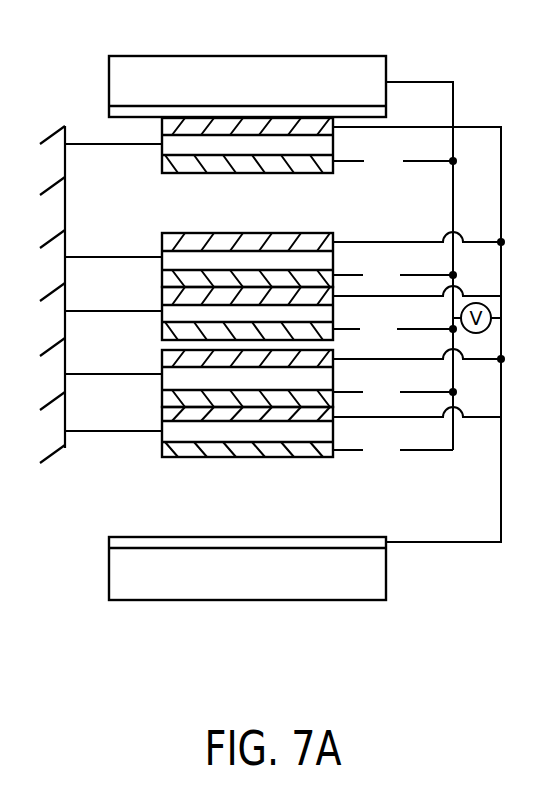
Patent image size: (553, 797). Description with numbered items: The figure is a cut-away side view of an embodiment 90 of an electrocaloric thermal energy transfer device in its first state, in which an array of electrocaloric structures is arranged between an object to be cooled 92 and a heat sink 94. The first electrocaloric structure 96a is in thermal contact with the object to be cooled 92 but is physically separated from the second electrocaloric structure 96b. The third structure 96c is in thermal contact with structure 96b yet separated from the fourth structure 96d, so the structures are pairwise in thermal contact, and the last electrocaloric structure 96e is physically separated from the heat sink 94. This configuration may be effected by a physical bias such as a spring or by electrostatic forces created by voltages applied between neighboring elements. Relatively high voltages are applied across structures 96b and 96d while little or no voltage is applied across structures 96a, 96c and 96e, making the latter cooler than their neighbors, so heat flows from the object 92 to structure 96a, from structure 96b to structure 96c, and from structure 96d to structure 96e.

The embodiment 90 is at (77, 112).
The object to be cooled 92 is at (370, 92).
The heat sink 94 is at (386, 570).
The first electrocaloric structure 96a is at (333, 145).
The second electrocaloric structure 96b is at (333, 260).
The third electrocaloric structure 96c is at (333, 315).
The fourth electrocaloric structure 96d is at (333, 375).
The last electrocaloric structure 96e is at (333, 430).